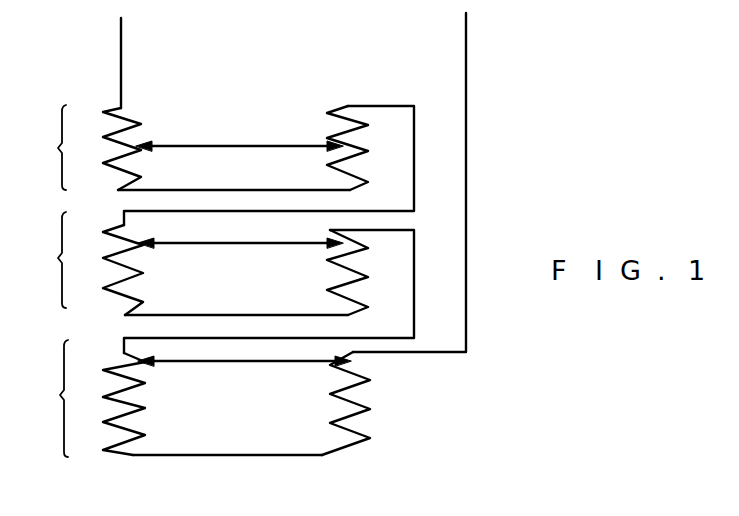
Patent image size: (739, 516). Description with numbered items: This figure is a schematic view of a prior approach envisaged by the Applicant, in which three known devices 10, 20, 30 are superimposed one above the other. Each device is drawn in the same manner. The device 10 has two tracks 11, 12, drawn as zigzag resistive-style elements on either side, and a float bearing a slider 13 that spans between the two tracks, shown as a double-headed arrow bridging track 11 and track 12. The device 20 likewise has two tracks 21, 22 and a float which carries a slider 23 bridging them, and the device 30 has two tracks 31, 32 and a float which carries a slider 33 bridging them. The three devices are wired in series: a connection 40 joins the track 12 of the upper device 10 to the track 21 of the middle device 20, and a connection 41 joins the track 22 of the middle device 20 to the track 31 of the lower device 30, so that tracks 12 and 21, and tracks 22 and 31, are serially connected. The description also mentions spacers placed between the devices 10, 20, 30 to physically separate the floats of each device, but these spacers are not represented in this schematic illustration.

The device 10 is at (199, 127).
The track 11 is at (133, 124).
The track 12 is at (333, 114).
The slider 13 is at (237, 146).
The device 20 is at (273, 289).
The track 21 is at (106, 289).
The track 22 is at (370, 278).
The slider 23 is at (207, 244).
The device 30 is at (221, 421).
The track 31 is at (142, 432).
The track 32 is at (366, 410).
The slider 33 is at (218, 363).
The connection 40 is at (414, 165).
The connection 41 is at (414, 310).